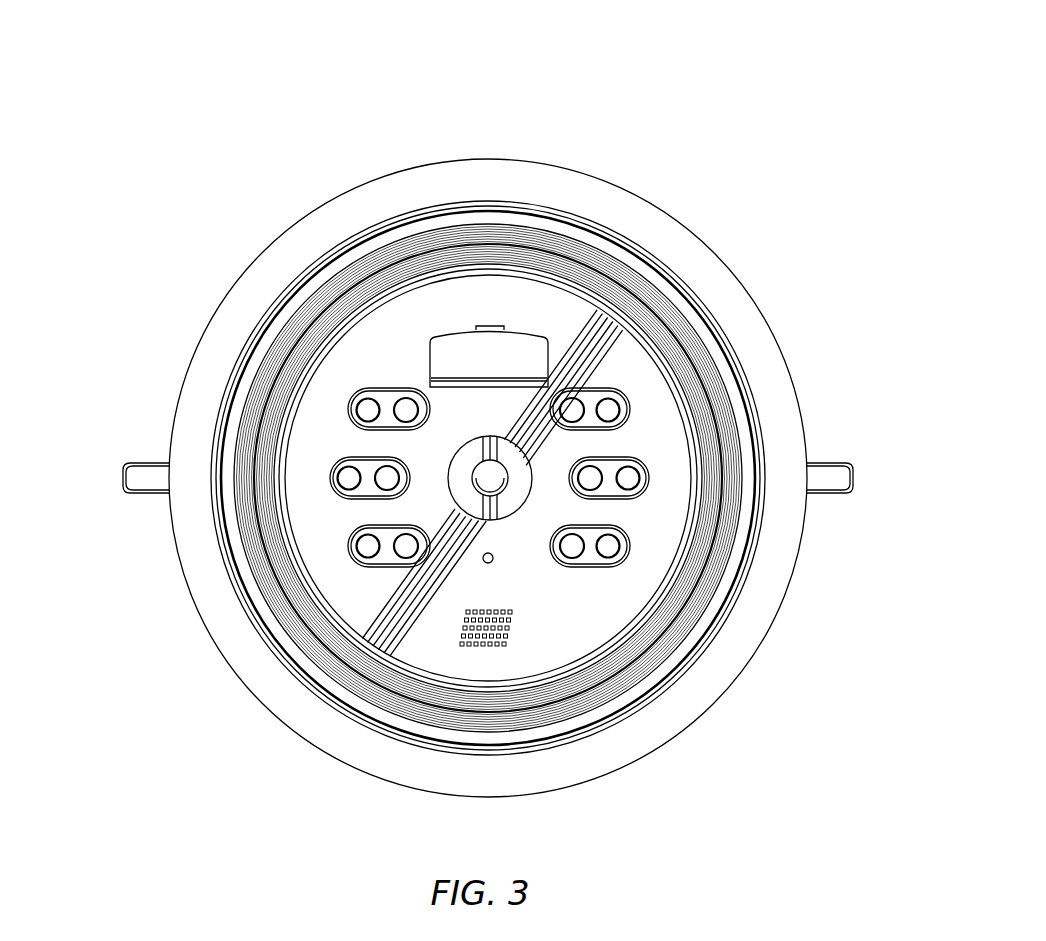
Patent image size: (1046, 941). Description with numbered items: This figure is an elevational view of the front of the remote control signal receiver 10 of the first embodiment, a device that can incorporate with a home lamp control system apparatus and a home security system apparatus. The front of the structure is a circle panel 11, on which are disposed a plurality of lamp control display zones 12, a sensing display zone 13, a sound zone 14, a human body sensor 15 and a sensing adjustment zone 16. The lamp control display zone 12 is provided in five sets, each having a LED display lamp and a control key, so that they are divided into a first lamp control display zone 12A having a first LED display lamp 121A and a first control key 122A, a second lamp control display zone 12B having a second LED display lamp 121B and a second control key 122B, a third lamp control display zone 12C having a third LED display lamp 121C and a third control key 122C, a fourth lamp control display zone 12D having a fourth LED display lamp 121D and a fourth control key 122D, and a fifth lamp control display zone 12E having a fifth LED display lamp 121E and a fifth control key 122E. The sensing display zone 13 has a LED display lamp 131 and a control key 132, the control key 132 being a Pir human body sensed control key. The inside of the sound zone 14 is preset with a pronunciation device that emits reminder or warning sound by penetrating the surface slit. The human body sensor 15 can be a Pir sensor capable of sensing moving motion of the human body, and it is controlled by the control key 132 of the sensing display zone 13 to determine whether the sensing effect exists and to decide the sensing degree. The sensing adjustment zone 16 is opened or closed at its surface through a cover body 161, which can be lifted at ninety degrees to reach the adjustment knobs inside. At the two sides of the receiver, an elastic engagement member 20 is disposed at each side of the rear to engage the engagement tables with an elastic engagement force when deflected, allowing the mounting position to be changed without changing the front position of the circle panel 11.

The remote control signal receiver 10 is at (607, 122).
The circle panel 11 is at (495, 178).
The lamp control display zone 12 is at (410, 356).
The first lamp control display zone 12A is at (400, 400).
The second lamp control display zone 12B is at (382, 472).
The third lamp control display zone 12C is at (402, 552).
The fourth lamp control display zone 12D is at (577, 403).
The fifth lamp control display zone 12E is at (594, 474).
The first LED display lamp 121A is at (365, 405).
The second LED display lamp 121B is at (344, 476).
The third LED display lamp 121C is at (365, 550).
The fourth LED display lamp 121D is at (610, 404).
The fifth LED display lamp 121E is at (630, 476).
The first control key 122A is at (383, 389).
The second control key 122B is at (366, 460).
The third control key 122C is at (400, 566).
The fourth control key 122D is at (575, 389).
The fifth control key 122E is at (608, 462).
The sensing display zone 13 is at (598, 567).
The LED display lamp 131 is at (612, 552).
The control key 132 is at (573, 562).
The sound zone 14 is at (478, 645).
The human body sensor 15 is at (492, 492).
The sensing adjustment zone 16 is at (532, 330).
The cover body 161 is at (465, 345).
The elastic engagement member 20 is at (146, 463).